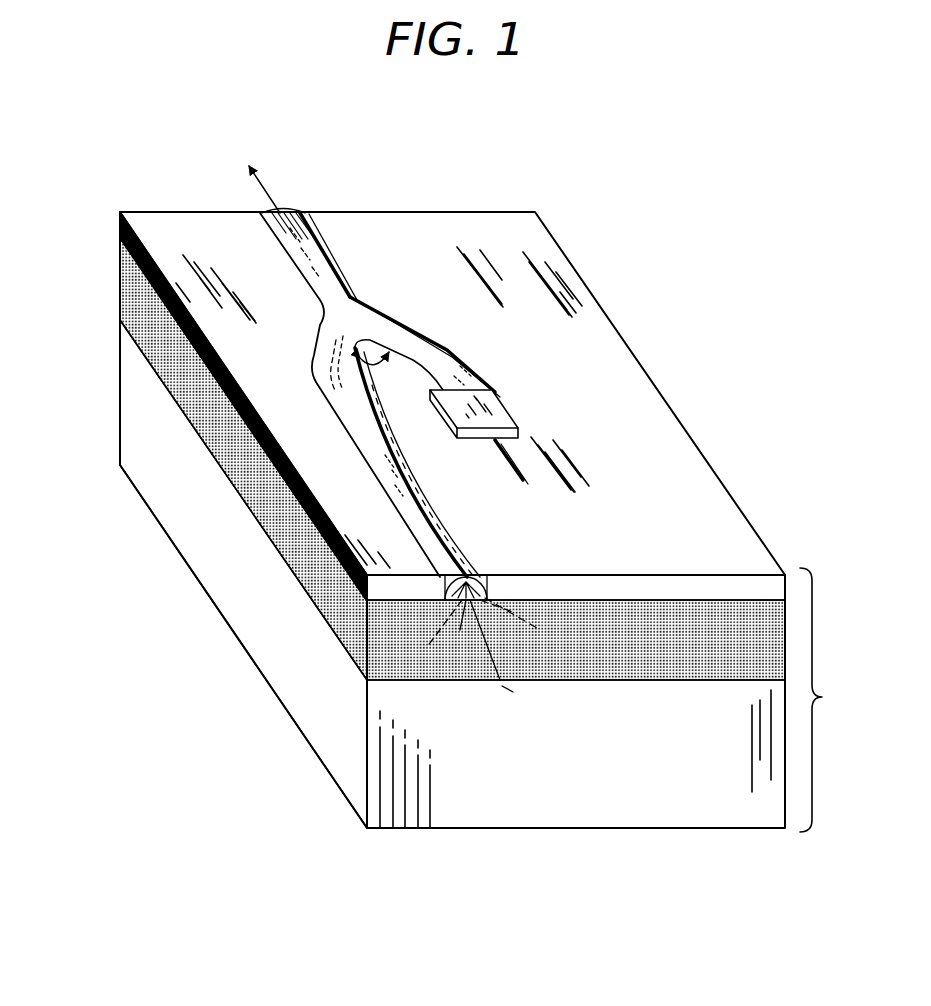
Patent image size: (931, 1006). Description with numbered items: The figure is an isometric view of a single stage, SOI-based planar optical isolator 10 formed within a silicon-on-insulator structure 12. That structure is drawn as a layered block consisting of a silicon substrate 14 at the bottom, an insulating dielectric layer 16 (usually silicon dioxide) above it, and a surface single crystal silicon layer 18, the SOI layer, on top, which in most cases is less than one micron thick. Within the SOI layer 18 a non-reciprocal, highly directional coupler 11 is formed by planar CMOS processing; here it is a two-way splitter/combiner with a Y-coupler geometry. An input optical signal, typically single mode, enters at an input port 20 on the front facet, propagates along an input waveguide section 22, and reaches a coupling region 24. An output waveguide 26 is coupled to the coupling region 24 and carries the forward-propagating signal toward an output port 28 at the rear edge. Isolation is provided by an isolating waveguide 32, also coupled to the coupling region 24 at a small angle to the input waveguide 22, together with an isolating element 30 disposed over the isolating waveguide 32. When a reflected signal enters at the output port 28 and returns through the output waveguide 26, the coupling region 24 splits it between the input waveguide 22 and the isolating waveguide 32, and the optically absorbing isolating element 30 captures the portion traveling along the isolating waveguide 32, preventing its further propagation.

The SOI-based planar optical isolator 10 is at (726, 246).
The non-reciprocal highly directional coupler 11 is at (355, 279).
The silicon-on-insulator (SOI) structure 12 is at (827, 700).
The silicon substrate 14 is at (136, 396).
The insulating dielectric layer 16 is at (132, 287).
The surface single crystal silicon layer 18 is at (122, 234).
The input port 20 is at (483, 564).
The input waveguide section 22 is at (407, 494).
The coupling region 24 is at (338, 316).
The output waveguide 26 is at (315, 240).
The output port 28 is at (262, 214).
The isolating element 30 is at (494, 410).
The isolating waveguide 32 is at (384, 328).